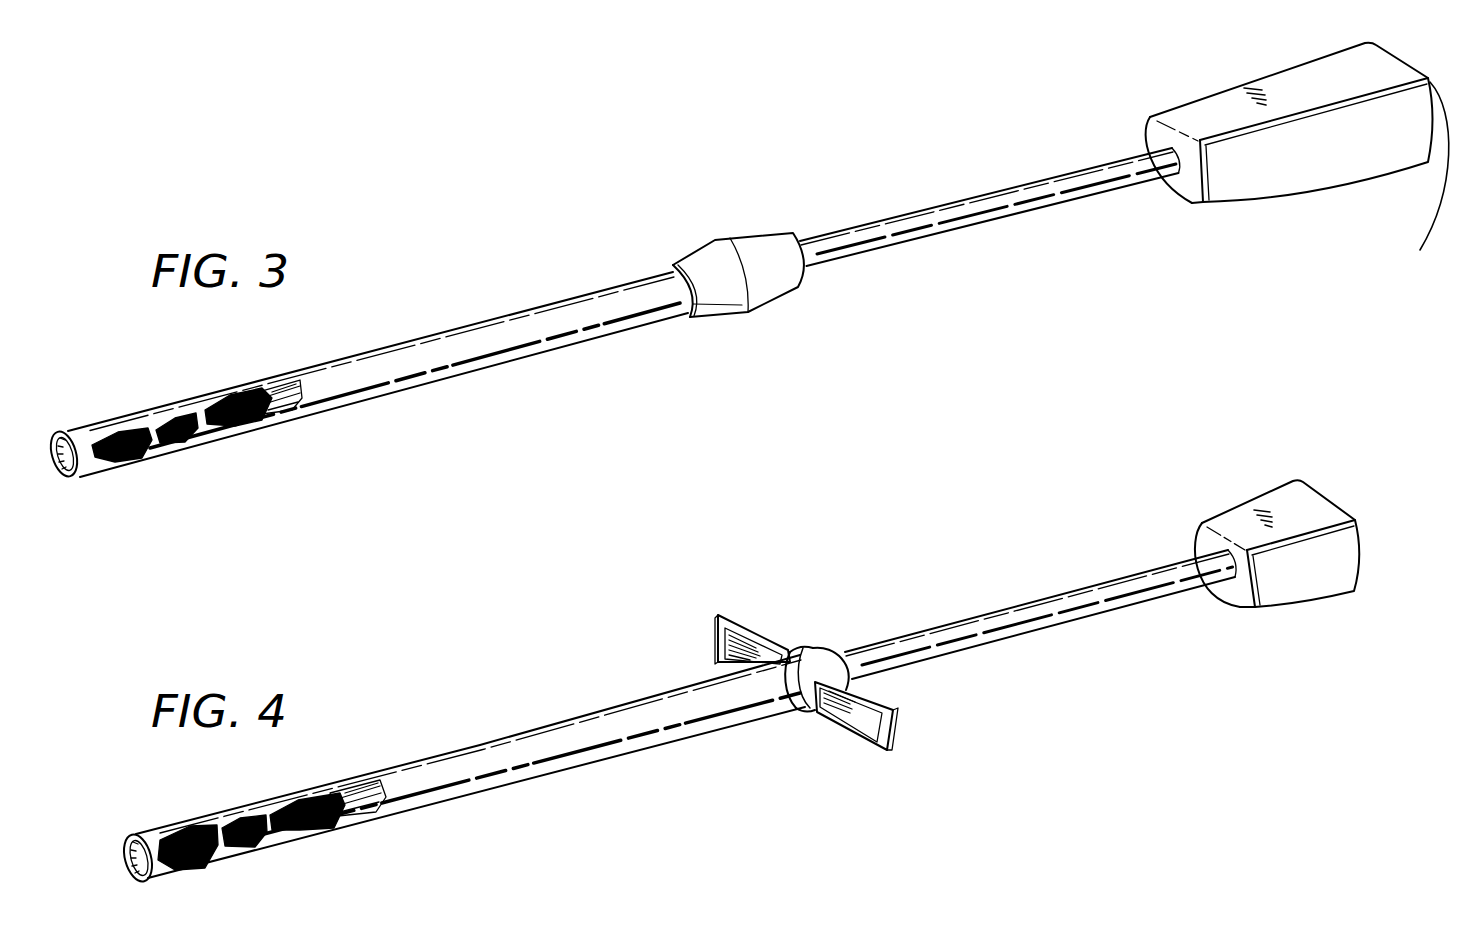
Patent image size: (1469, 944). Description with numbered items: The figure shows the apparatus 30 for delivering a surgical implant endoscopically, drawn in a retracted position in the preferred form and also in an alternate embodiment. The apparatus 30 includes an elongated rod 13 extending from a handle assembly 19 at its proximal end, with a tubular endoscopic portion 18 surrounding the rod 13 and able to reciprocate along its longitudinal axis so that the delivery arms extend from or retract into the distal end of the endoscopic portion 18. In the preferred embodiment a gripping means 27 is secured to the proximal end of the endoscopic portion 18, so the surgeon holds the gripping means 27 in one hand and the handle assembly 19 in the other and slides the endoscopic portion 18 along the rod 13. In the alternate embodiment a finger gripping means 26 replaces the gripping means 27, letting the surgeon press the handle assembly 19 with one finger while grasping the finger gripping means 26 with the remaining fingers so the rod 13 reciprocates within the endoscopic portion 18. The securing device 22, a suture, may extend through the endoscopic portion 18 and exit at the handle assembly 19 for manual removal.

In FIG. 3, the elongated rod 13 is at (972, 203).
In FIG. 4, the elongated rod 13 is at (1048, 607).
In FIG. 3, the endoscopic portion 18 is at (545, 313).
In FIG. 4, the endoscopic portion 18 is at (607, 725).
In FIG. 3, the handle assembly 19 is at (1267, 177).
In FIG. 4, the handle assembly 19 is at (1298, 588).
In FIG. 3, the securing device 22 is at (1438, 208).
In FIG. 4, the finger gripping means 26 is at (767, 640).
In FIG. 3, the gripping means 27 is at (757, 250).
In FIG. 3, the apparatus 30 is at (575, 238).
In FIG. 4, the apparatus 30 is at (615, 636).